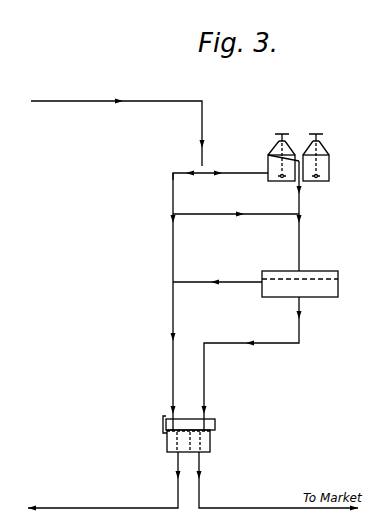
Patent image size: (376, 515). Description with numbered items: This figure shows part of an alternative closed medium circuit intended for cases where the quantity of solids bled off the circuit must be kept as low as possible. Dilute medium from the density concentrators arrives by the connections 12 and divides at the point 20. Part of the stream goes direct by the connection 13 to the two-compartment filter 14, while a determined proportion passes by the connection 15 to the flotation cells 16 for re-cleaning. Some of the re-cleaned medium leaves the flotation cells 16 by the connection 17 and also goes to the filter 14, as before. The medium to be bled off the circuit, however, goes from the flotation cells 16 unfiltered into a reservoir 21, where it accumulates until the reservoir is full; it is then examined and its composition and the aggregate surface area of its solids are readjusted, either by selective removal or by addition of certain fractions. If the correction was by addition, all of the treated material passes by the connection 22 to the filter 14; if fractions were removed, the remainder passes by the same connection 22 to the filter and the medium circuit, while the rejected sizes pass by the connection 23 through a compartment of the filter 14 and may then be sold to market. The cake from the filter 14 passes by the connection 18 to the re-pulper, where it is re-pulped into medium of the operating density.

The connections 12 is at (78, 100).
The point 20 is at (200, 172).
The line to filters 15 is at (236, 172).
The flotation cells 16 is at (299, 161).
The connection from flotation cells to filter 17 is at (240, 213).
The connection 13 is at (172, 302).
The connection from reservoir to filter 22 is at (207, 280).
The reservoir 21 is at (340, 289).
The connection for rejected sizes 23 is at (242, 341).
The two-compartment filter 14 is at (212, 443).
The connection to re-pulper 18 is at (126, 505).